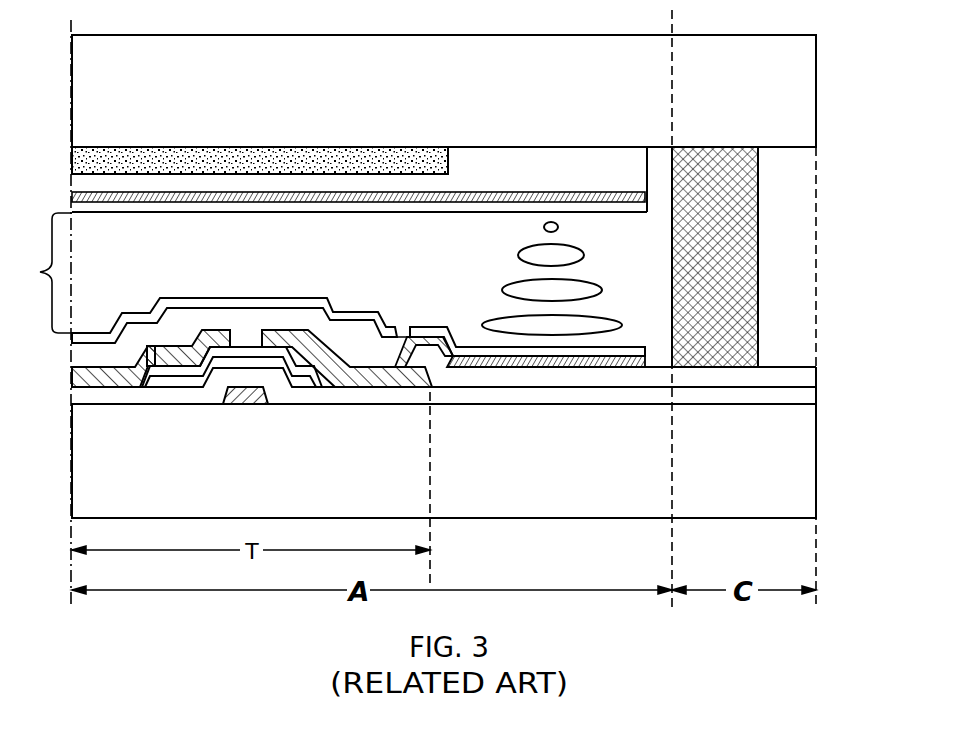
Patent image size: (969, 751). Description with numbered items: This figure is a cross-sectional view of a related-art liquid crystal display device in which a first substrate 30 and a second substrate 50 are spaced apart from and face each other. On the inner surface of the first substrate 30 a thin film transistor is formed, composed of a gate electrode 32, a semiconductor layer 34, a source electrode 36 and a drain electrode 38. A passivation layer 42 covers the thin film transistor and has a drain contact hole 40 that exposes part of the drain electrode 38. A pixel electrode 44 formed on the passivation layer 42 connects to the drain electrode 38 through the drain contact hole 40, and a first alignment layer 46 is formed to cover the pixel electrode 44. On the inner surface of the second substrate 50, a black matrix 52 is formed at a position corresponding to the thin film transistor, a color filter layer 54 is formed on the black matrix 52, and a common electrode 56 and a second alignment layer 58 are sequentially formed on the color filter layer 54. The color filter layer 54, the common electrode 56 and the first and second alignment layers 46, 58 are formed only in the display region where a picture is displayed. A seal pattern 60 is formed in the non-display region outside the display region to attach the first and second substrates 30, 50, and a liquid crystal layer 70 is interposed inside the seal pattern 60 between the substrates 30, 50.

The first substrate 30 is at (118, 467).
The gate electrode 32 is at (245, 405).
The semiconductor layer 34 is at (338, 372).
The source electrode 36 is at (212, 331).
The drain electrode 38 is at (284, 331).
The drain contact hole 40 is at (408, 308).
The passivation layer 42 is at (133, 333).
The pixel electrode 44 is at (445, 335).
The first alignment layer 46 is at (345, 311).
The second substrate 50 is at (131, 92).
The black matrix 52 is at (340, 157).
The color filter layer 54 is at (536, 158).
The common electrode 56 is at (386, 203).
The second alignment layer 58 is at (487, 213).
The seal pattern 60 is at (758, 233).
The liquid crystal layer 70 is at (40, 272).